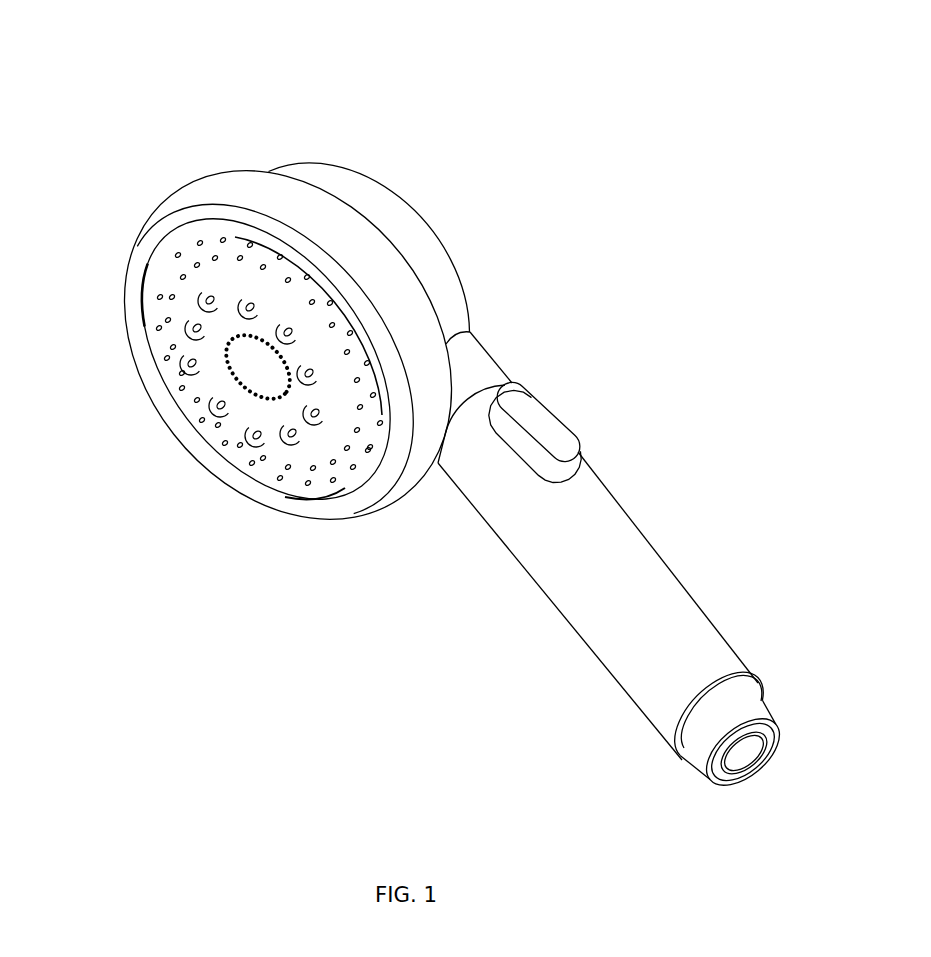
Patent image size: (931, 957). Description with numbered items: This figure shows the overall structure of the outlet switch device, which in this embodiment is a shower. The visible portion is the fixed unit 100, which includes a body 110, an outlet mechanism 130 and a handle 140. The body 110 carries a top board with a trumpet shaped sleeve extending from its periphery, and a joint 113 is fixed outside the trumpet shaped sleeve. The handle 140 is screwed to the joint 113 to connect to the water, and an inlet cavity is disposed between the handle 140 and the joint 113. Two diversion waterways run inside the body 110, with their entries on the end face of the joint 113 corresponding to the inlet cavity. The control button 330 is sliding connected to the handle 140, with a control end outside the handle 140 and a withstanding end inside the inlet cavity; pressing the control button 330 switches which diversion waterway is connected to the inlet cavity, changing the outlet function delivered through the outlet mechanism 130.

The fixed unit 100 is at (310, 130).
The body 110 is at (392, 228).
The outlet mechanism 130 is at (165, 273).
The joint 113 is at (480, 367).
The control button 330 is at (549, 428).
The handle 140 is at (608, 555).